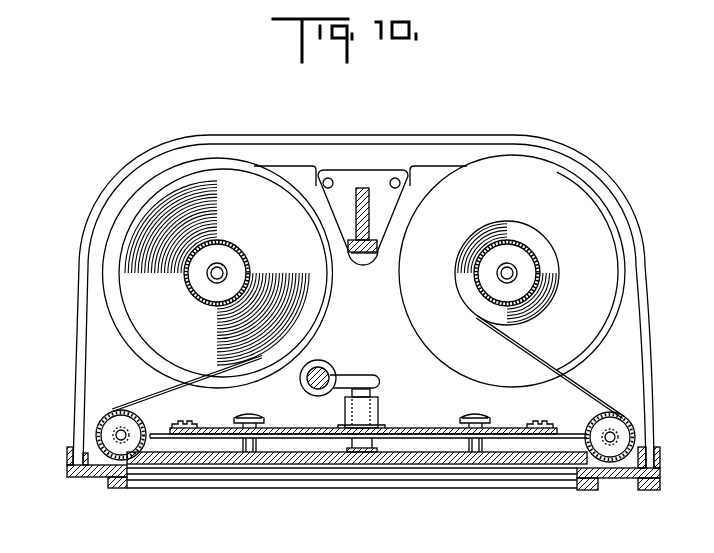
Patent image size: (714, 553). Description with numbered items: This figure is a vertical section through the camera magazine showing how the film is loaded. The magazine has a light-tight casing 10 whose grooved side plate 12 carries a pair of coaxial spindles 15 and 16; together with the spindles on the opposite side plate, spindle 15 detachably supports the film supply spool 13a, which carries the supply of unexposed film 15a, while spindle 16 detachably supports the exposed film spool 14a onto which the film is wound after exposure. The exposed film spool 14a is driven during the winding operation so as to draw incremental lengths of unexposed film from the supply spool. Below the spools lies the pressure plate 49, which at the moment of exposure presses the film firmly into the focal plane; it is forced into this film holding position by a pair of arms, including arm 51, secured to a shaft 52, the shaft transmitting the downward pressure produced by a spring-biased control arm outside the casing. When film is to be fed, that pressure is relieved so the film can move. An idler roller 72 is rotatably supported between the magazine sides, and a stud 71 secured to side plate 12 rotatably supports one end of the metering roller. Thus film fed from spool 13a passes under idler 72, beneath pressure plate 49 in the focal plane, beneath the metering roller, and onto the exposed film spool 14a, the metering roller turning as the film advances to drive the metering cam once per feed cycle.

The light-tight casing 10 is at (141, 157).
The side plate 12 is at (90, 352).
The film supply spool 13a is at (192, 257).
The exposed film spool 14a is at (488, 250).
The spindle 15 is at (224, 270).
The unexposed film 15a is at (158, 395).
The spindle 16 is at (516, 270).
The pressure plate 49 is at (325, 457).
The arm 51 is at (353, 381).
The shaft 52 is at (323, 360).
The stud 71 is at (612, 430).
The idler roller 72 is at (145, 429).